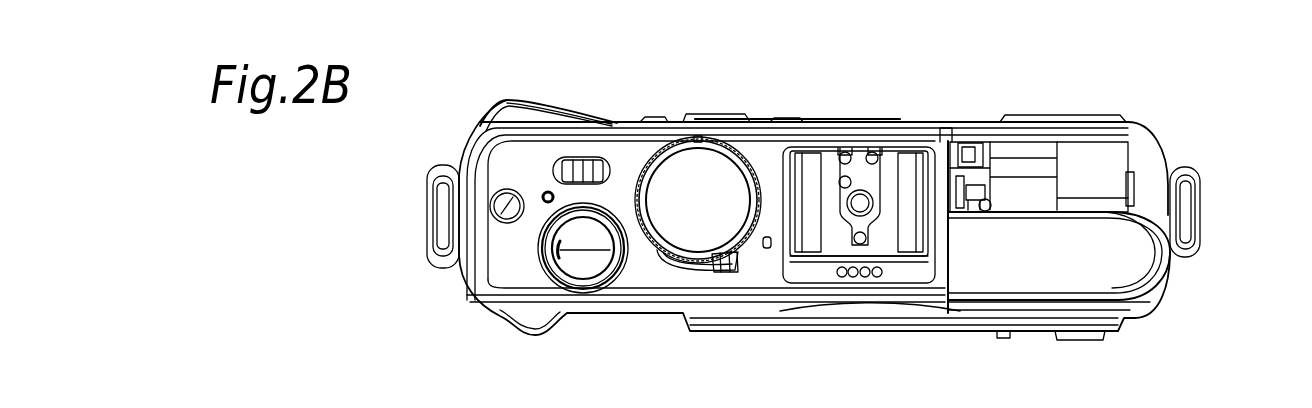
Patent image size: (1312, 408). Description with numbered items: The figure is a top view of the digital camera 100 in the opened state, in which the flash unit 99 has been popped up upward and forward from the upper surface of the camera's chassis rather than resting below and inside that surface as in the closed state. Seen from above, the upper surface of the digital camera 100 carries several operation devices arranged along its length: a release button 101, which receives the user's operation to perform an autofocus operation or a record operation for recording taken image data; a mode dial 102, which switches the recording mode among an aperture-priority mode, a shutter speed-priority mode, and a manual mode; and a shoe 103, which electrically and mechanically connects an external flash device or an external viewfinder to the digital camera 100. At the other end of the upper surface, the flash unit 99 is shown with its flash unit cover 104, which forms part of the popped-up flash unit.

The flash unit 99 is at (1231, 161).
The digital camera 100 is at (932, 98).
The release button 101 is at (580, 262).
The mode dial 102 is at (705, 188).
The shoe 103 is at (883, 233).
The flash unit cover 104 is at (1090, 245).